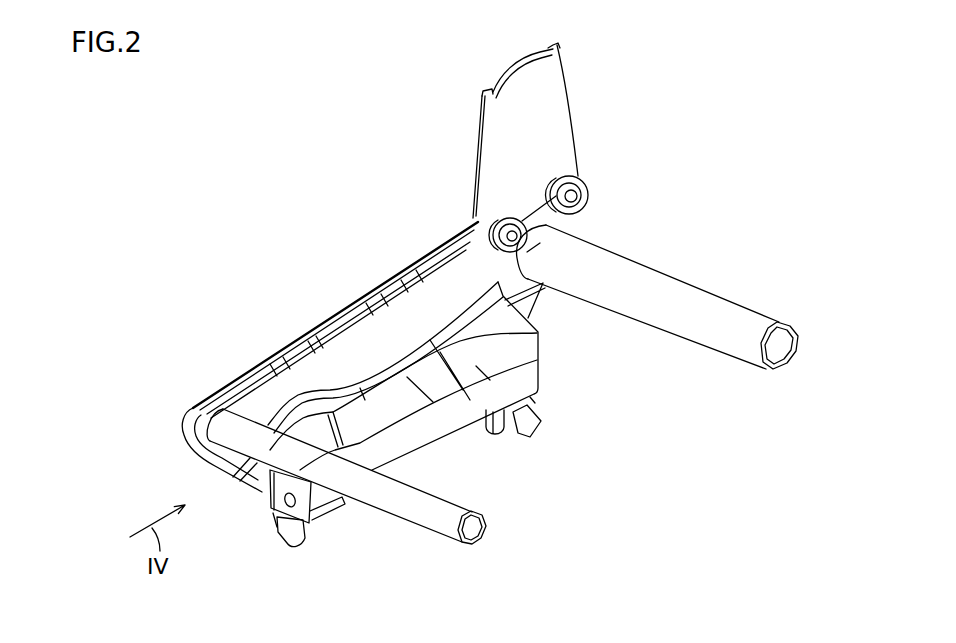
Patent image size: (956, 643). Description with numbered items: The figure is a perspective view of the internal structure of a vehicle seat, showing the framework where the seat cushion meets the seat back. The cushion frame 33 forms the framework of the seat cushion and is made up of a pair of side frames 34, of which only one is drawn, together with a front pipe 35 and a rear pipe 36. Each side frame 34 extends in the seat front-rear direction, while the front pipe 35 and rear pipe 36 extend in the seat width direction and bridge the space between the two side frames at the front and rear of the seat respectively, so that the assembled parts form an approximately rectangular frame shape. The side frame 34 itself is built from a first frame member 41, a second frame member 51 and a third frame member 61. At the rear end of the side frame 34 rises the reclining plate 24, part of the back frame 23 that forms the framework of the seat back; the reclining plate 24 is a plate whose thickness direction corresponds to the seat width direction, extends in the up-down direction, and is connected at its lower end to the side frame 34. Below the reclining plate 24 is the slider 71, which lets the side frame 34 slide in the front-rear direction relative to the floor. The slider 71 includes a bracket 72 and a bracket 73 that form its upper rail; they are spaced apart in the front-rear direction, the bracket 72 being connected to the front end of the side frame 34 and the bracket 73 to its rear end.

The back frame 23 is at (587, 54).
The reclining plate 24 is at (557, 107).
The cushion frame 33 is at (657, 287).
The side frame 34 is at (367, 272).
The front pipe 35 is at (430, 513).
The rear pipe 36 is at (733, 312).
The first frame member 41 is at (260, 410).
The second frame member 51 is at (318, 332).
The third frame member 61 is at (448, 427).
The slider 71 is at (262, 545).
The bracket 72 is at (305, 515).
The bracket 73 is at (534, 400).